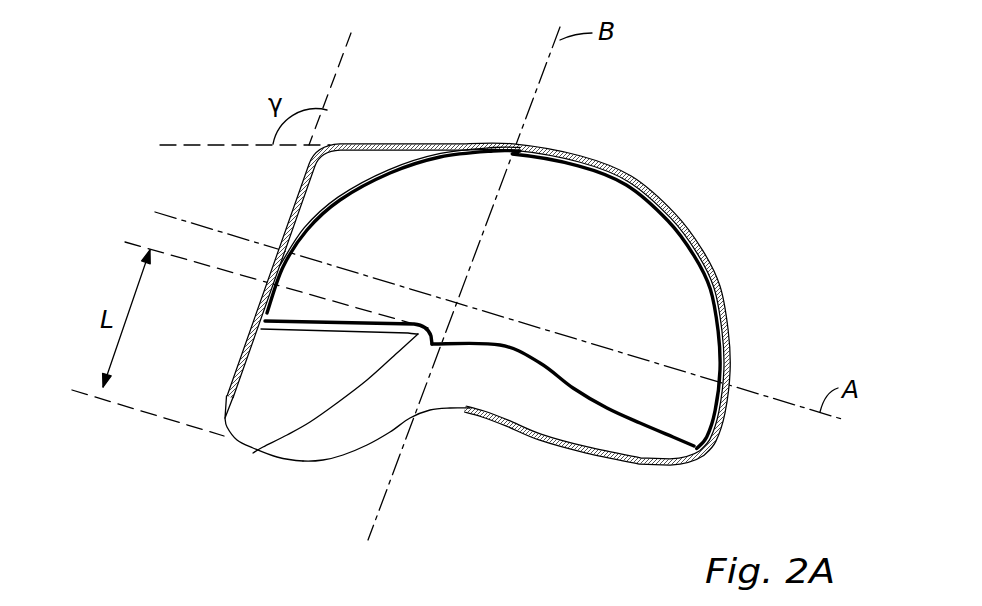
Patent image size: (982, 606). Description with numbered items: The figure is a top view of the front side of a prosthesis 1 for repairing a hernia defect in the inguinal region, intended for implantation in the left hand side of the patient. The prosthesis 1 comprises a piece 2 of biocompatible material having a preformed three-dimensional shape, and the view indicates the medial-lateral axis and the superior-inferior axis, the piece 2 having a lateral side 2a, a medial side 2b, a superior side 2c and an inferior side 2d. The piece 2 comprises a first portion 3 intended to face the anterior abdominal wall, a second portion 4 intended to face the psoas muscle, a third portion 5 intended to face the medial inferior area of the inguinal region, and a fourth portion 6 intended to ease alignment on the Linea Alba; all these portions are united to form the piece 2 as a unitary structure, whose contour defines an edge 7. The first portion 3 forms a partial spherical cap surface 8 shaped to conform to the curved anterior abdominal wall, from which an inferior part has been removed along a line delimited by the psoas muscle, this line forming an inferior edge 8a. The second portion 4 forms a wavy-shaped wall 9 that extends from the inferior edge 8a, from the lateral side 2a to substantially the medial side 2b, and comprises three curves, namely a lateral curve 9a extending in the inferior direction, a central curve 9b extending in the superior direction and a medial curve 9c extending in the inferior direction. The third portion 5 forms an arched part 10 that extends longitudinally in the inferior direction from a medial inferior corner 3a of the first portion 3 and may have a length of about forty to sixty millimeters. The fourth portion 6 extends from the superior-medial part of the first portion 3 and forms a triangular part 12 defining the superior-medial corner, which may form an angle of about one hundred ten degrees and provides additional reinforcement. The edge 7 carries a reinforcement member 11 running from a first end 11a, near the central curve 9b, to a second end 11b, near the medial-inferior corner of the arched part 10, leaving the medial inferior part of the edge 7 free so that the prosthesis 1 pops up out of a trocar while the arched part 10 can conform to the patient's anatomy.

The prosthesis 1 is at (731, 156).
The piece 2 is at (684, 338).
The lateral side 2a is at (708, 451).
The medial side 2b is at (198, 437).
The superior side 2c is at (558, 121).
The inferior side 2d is at (359, 500).
The first portion 3 is at (641, 258).
The medial inferior corner 3a is at (264, 318).
The second portion 4 is at (560, 413).
The third portion 5 is at (276, 396).
The fourth portion 6 is at (363, 168).
The edge 7 is at (425, 417).
The partial spherical cap surface 8 is at (563, 198).
The inferior edge 8a is at (622, 408).
The wavy-shaped wall 9 is at (517, 404).
The lateral curve 9a is at (595, 465).
The central curve 9b is at (439, 412).
The medial curve 9c is at (325, 461).
The arched part 10 is at (256, 452).
The reinforcement member 11 is at (630, 180).
The first end 11a is at (463, 410).
The second end 11b is at (224, 393).
The triangular part 12 is at (318, 193).